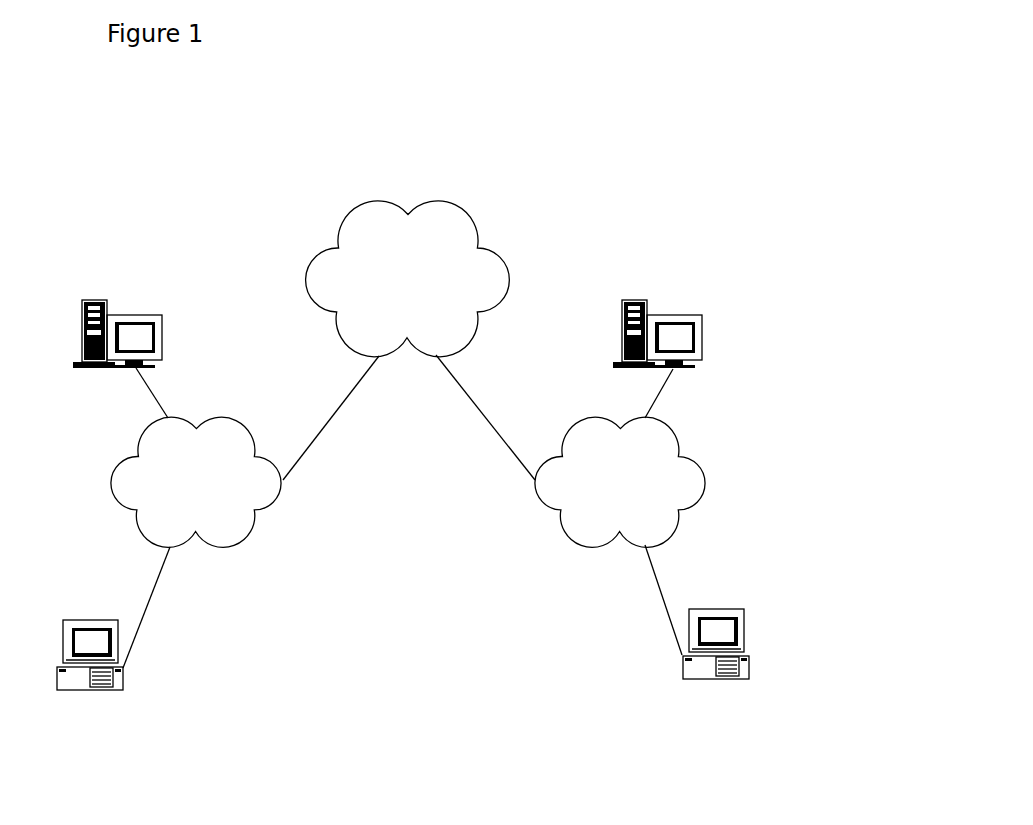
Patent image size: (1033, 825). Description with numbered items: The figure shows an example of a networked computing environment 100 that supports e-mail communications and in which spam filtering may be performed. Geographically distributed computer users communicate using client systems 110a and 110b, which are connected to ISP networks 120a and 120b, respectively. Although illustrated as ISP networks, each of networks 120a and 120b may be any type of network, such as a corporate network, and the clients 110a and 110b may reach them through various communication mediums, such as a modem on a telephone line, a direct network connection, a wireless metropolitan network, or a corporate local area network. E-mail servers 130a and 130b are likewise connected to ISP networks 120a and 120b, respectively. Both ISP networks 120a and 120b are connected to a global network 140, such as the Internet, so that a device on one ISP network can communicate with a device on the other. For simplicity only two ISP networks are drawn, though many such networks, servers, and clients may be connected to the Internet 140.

The networked computing environment 100 is at (630, 125).
The client system 110a is at (90, 690).
The client system 110b is at (752, 658).
The ISP network 120a is at (220, 543).
The ISP network 120b is at (595, 547).
The e-mail server 130a is at (132, 315).
The e-mail server 130b is at (675, 317).
The global network 140 is at (378, 202).